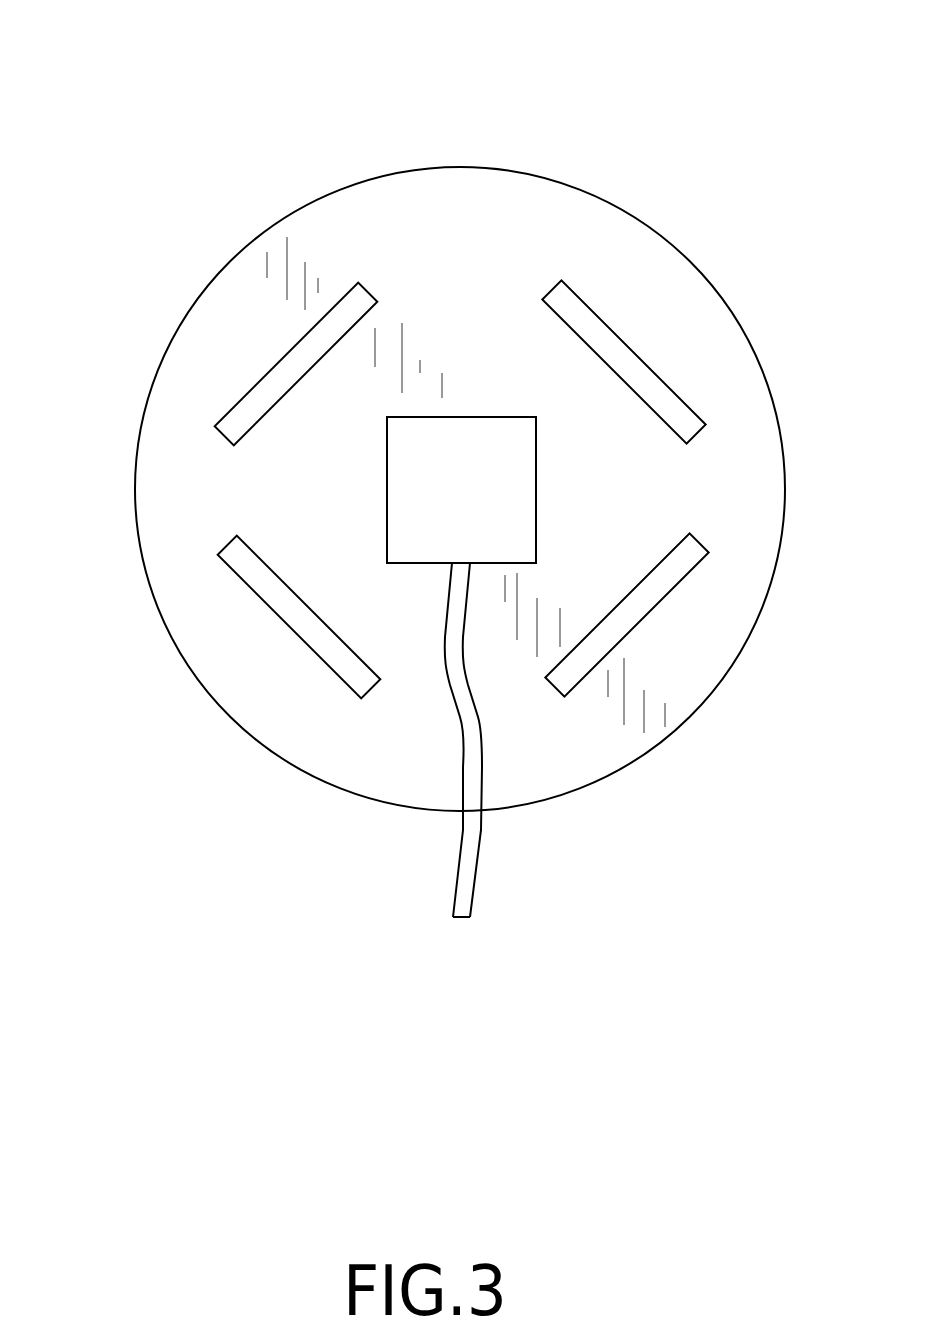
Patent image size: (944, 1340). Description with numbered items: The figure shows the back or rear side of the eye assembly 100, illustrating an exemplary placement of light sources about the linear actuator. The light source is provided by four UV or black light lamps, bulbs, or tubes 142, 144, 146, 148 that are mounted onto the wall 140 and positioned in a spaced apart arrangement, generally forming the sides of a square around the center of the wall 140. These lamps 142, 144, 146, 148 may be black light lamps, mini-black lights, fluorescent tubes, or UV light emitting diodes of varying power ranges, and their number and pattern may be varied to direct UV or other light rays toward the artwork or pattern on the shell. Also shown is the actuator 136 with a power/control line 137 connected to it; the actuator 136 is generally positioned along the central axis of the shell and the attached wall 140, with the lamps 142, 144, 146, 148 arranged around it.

The eye assembly 100 is at (119, 170).
The actuator 136 is at (487, 503).
The power/control line 137 is at (473, 890).
The wall 140 is at (388, 230).
The UV or black light lamp 142 is at (243, 393).
The UV or black light lamp 144 is at (288, 627).
The UV or black light lamp 146 is at (653, 372).
The UV or black light lamp 148 is at (662, 602).